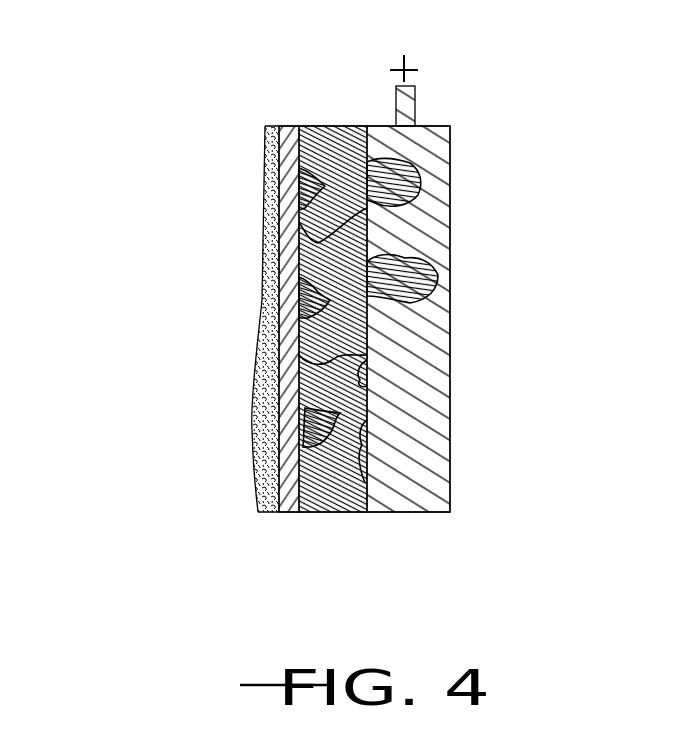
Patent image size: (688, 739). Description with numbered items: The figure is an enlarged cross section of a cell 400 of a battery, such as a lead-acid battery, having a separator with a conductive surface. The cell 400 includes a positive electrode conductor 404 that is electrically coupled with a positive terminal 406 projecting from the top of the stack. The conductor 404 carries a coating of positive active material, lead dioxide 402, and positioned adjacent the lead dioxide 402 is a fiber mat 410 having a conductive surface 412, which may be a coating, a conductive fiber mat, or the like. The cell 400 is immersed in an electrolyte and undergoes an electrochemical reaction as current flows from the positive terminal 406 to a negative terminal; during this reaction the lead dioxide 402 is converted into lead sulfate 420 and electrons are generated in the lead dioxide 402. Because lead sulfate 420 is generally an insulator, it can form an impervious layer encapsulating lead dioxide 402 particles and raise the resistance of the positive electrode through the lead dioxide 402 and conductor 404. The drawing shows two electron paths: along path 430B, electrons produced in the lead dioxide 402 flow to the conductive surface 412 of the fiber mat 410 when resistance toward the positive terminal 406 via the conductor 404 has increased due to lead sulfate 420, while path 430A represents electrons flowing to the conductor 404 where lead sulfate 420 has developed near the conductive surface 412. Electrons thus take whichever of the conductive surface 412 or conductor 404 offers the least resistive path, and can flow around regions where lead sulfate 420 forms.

The cell 400 is at (515, 115).
The lead dioxide 402 is at (398, 512).
The positive electrode conductor 404 is at (450, 342).
The positive terminal 406 is at (417, 102).
The fiber mat 410 is at (257, 447).
The conductive surface 412 is at (288, 513).
The lead sulfate 420 is at (312, 183).
The path 430A is at (300, 221).
The path 430B is at (300, 345).